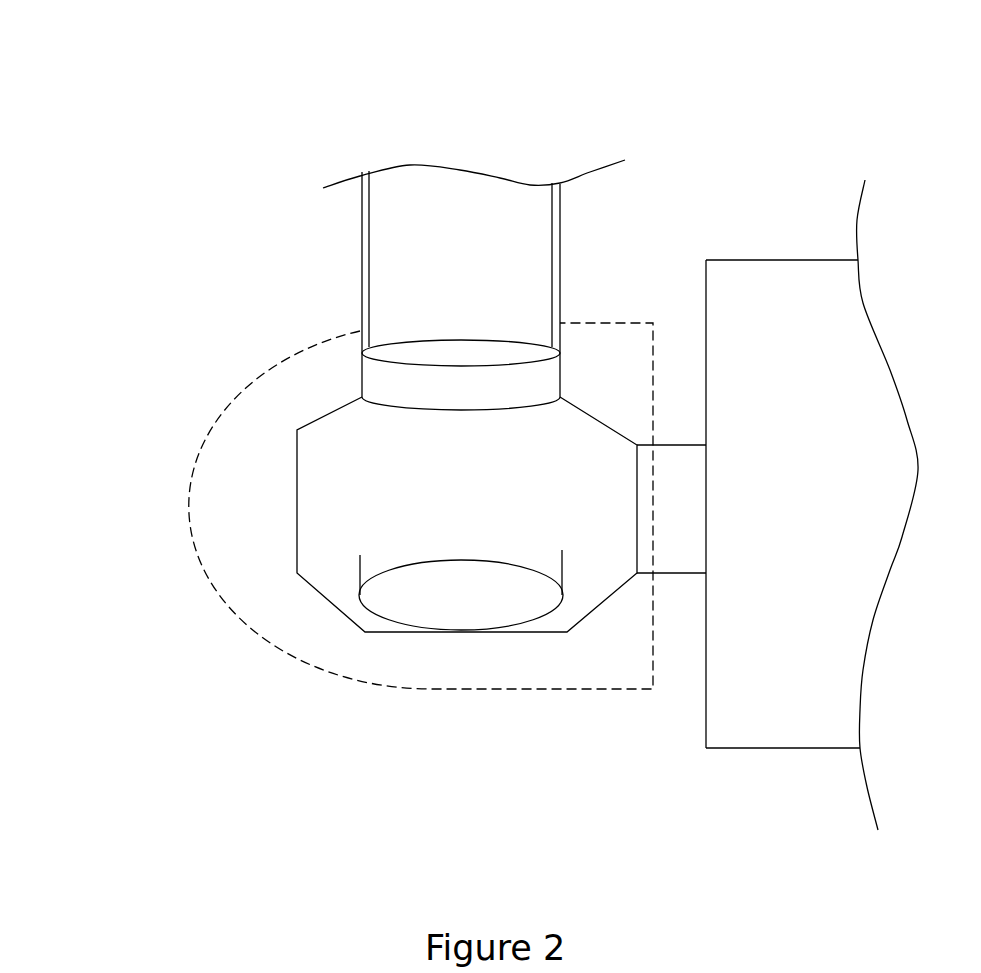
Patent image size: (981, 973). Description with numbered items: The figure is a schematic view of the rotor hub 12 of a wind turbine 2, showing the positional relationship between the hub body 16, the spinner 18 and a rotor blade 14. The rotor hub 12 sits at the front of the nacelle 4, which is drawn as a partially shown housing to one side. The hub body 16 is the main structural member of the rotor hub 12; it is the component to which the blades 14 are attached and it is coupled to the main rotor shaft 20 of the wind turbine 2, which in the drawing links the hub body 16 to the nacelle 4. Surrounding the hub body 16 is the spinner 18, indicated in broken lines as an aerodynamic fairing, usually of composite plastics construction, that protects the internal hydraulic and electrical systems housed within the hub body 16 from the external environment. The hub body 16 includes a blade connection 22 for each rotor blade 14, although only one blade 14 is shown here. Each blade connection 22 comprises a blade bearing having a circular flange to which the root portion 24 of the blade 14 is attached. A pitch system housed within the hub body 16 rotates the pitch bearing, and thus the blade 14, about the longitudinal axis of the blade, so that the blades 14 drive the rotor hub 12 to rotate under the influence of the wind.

The wind turbine 2 is at (307, 118).
The nacelle 4 is at (768, 707).
The rotor hub 12 is at (167, 525).
The blade 14 is at (523, 243).
The hub body 16 is at (318, 568).
The spinner 18 is at (385, 686).
The main rotor shaft 20 is at (688, 514).
The blade connection 22 is at (540, 377).
The root portion 24 is at (362, 249).